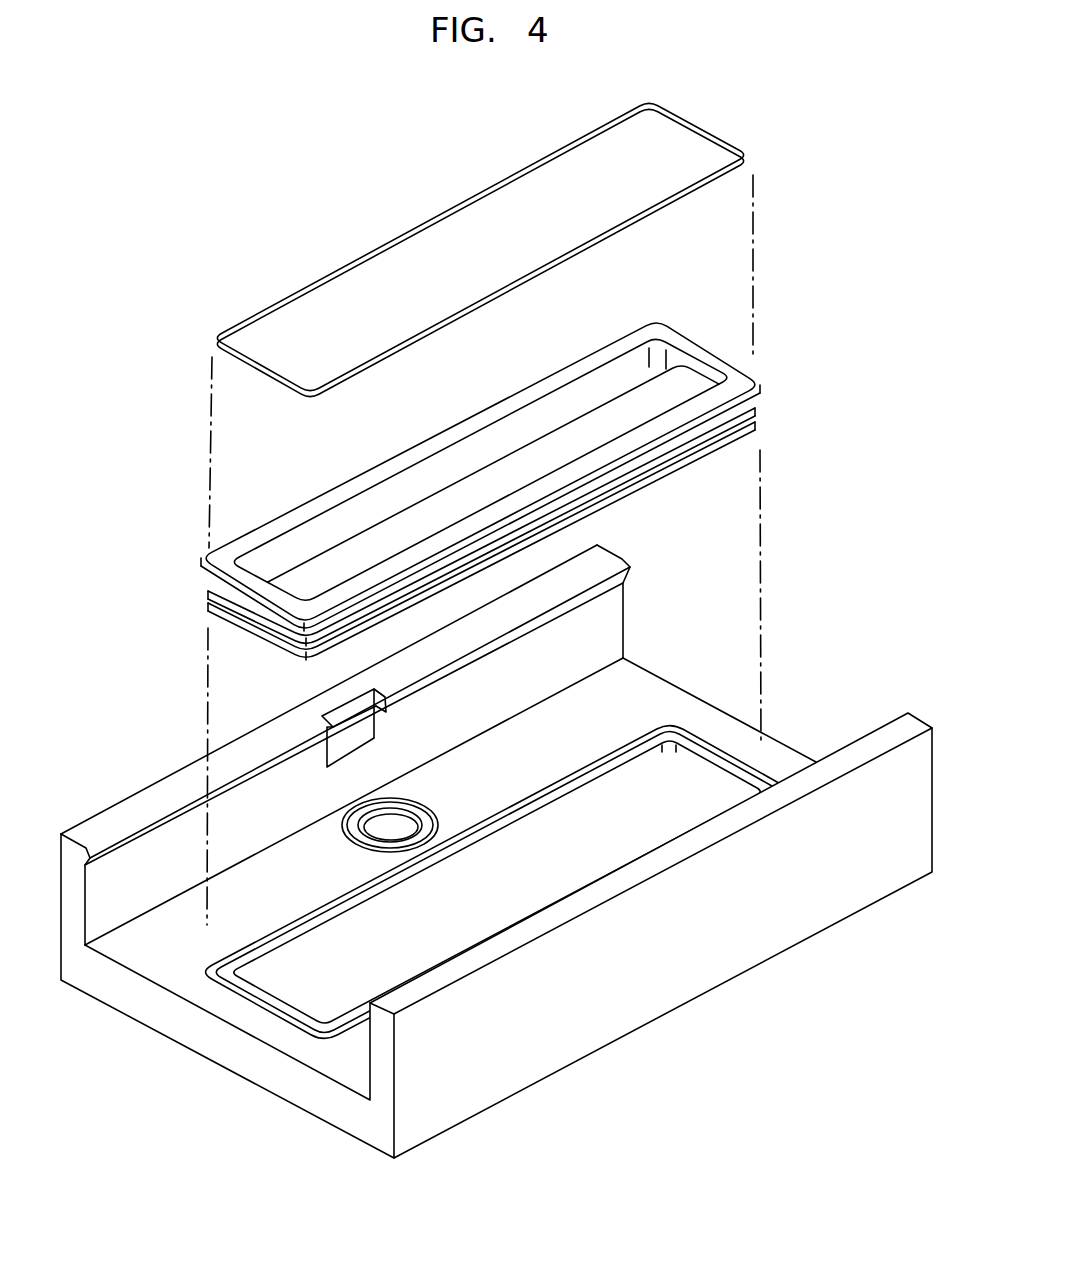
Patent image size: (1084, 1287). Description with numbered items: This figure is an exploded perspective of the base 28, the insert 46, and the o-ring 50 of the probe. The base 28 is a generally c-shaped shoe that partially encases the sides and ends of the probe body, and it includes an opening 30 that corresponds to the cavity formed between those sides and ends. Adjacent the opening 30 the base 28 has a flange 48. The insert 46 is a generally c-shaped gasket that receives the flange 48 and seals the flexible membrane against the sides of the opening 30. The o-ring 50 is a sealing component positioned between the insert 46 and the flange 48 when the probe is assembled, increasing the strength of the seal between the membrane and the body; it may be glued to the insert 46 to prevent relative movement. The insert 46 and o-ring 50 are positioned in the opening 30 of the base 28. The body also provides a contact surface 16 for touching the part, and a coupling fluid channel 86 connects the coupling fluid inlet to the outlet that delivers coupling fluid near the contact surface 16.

The contact surface 16 is at (292, 1120).
The base 28 is at (933, 767).
The opening 30 is at (573, 810).
The insert 46 is at (558, 372).
The flange 48 is at (628, 770).
The o-ring 50 is at (702, 190).
The coupling fluid channel 86 is at (385, 828).